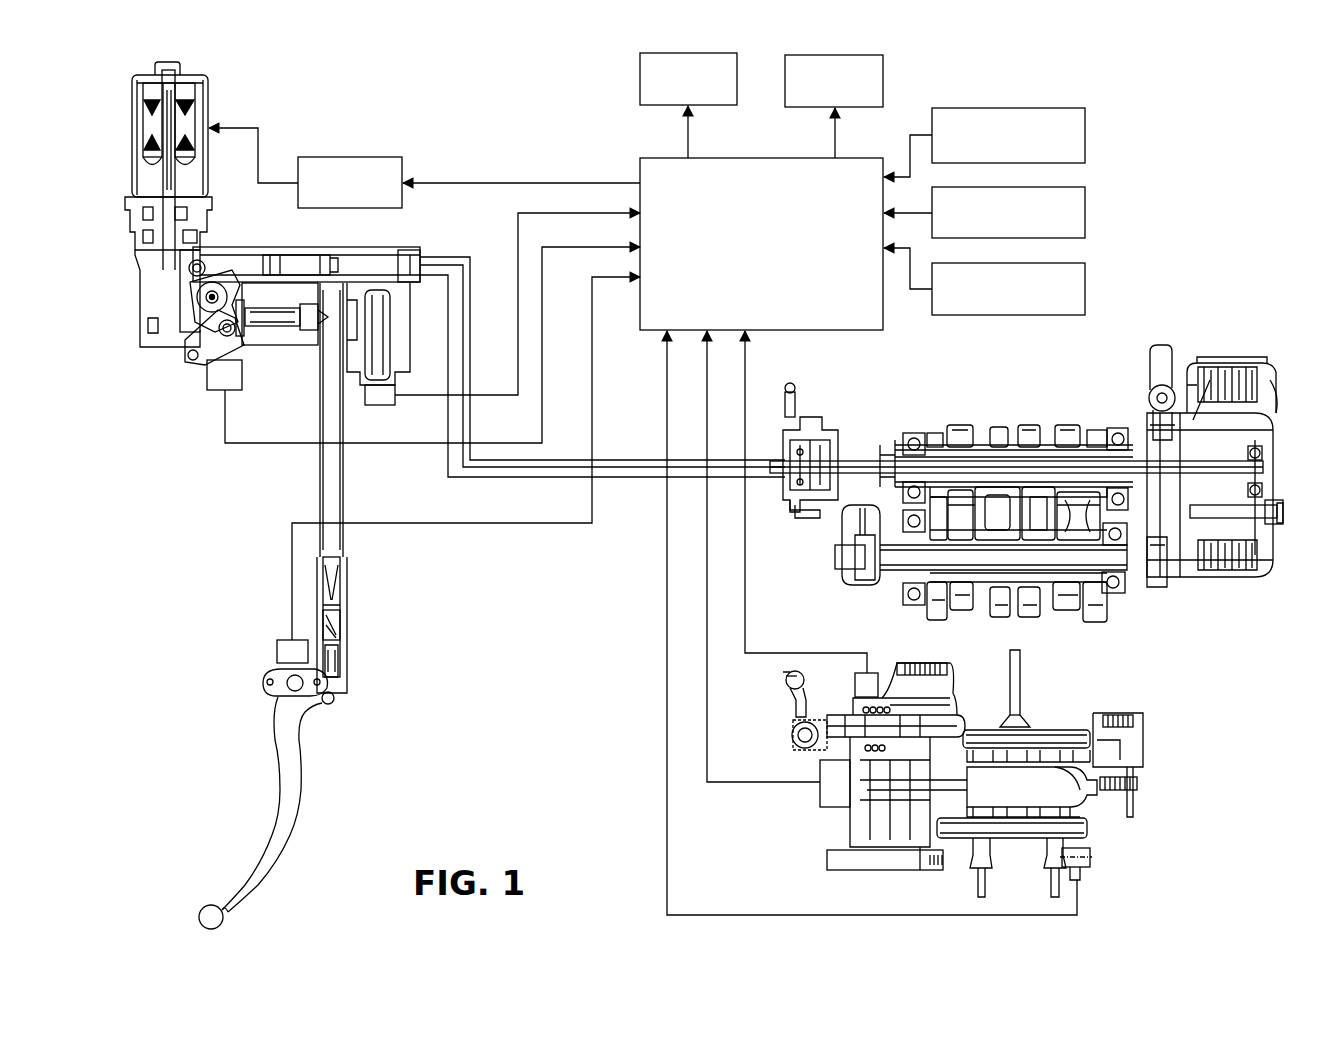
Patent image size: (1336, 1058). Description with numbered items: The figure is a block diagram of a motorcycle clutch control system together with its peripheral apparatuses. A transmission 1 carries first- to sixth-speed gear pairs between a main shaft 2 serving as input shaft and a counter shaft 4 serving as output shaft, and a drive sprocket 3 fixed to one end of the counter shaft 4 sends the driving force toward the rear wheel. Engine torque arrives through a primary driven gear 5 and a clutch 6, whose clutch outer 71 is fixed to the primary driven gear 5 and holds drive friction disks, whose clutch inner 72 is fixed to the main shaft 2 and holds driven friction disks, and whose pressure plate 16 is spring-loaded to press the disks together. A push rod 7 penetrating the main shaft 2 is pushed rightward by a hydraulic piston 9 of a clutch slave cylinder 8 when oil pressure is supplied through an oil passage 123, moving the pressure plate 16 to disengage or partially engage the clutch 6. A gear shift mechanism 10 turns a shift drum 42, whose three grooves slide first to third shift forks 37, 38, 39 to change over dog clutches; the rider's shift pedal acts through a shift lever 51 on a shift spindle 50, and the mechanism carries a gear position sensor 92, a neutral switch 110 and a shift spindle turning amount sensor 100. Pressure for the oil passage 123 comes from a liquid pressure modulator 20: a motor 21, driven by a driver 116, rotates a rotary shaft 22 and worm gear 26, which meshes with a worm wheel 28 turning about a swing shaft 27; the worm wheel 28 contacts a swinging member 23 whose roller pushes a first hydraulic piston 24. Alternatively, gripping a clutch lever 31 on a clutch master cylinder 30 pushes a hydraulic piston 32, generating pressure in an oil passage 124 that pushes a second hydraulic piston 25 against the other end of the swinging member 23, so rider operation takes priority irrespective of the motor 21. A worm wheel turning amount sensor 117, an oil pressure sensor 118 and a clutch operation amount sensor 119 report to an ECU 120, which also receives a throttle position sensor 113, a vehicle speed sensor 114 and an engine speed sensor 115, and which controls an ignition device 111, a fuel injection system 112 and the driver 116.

The transmission 1 is at (1008, 400).
The main shaft 2 is at (1091, 450).
The drive sprocket 3 is at (859, 528).
The counter shaft 4 is at (905, 565).
The primary driven gear 5 is at (1166, 352).
The clutch 6 is at (1284, 358).
The push rod 7 is at (871, 460).
The clutch slave cylinder 8 is at (823, 415).
The hydraulic piston 9 is at (797, 506).
The gear shift mechanism 10 is at (1143, 879).
The pressure plate 16 is at (1271, 553).
The liquid pressure modulator 20 is at (140, 378).
The motor 21 is at (208, 103).
The rotary shaft 22 is at (160, 265).
The swinging member 23 is at (195, 345).
The first hydraulic piston 24 is at (295, 265).
The second hydraulic piston 25 is at (276, 333).
The worm gear 26 is at (190, 290).
The swing shaft 27 is at (214, 294).
The worm wheel 28 is at (198, 297).
The clutch master cylinder 30 is at (358, 596).
The clutch lever 31 is at (272, 831).
The hydraulic piston 32 is at (333, 626).
The first shift fork 37 is at (1019, 690).
The second shift fork 38 is at (1048, 886).
The third shift fork 39 is at (974, 886).
The shift drum 42 is at (1099, 800).
The shift spindle 50 is at (830, 738).
The shift lever 51 is at (790, 704).
The clutch outer 71 is at (1216, 574).
The clutch inner 72 is at (1196, 560).
The gear position sensor 92 is at (823, 806).
The shift spindle turning amount sensor 100 is at (878, 675).
The neutral switch 110 is at (1088, 876).
The ignition device 111 is at (705, 105).
The fuel injection system 112 is at (848, 107).
The throttle position sensor 113 is at (1082, 163).
The vehicle speed sensor 114 is at (1082, 238).
The engine speed sensor 115 is at (1082, 315).
The driver 116 is at (370, 208).
The worm wheel turning amount sensor 117 is at (221, 382).
The oil pressure sensor 118 is at (378, 396).
The clutch operation amount sensor 119 is at (276, 652).
The ECU 120 is at (865, 332).
The oil passage 123 is at (629, 480).
The oil passage 124 is at (320, 478).